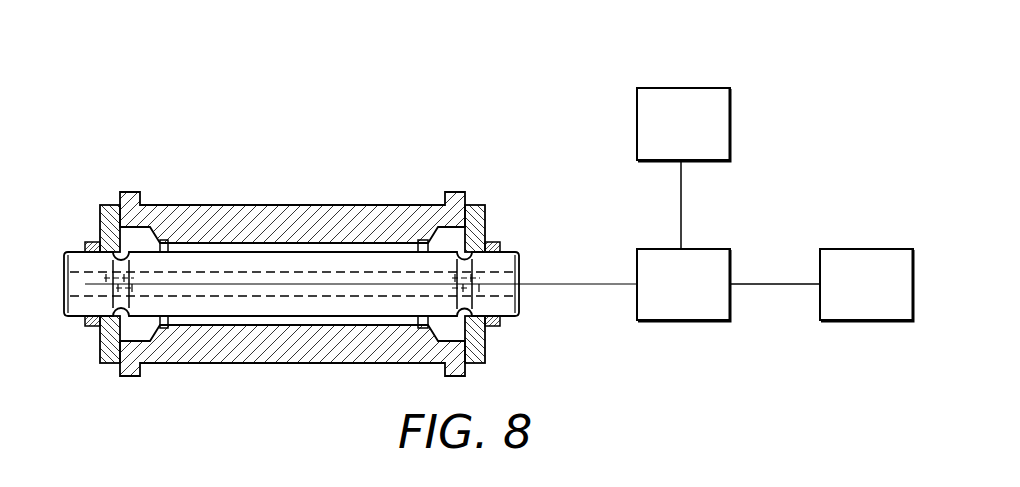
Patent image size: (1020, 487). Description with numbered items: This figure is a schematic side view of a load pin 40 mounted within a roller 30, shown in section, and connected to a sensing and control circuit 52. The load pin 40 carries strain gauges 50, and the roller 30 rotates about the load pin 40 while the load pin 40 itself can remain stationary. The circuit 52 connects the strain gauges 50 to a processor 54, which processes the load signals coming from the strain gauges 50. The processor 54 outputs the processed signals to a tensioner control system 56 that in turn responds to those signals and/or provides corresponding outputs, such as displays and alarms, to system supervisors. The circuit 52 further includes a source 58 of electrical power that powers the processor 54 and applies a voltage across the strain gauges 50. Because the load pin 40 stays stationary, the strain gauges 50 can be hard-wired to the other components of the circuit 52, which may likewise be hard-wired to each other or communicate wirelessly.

The roller 30 is at (291, 218).
The load pin 40 is at (77, 257).
The strain gauges 50 is at (96, 294).
The circuit 52 is at (775, 206).
The processor 54 is at (705, 322).
The tensioner control system 56 is at (701, 88).
The source of electrical power 58 is at (890, 322).